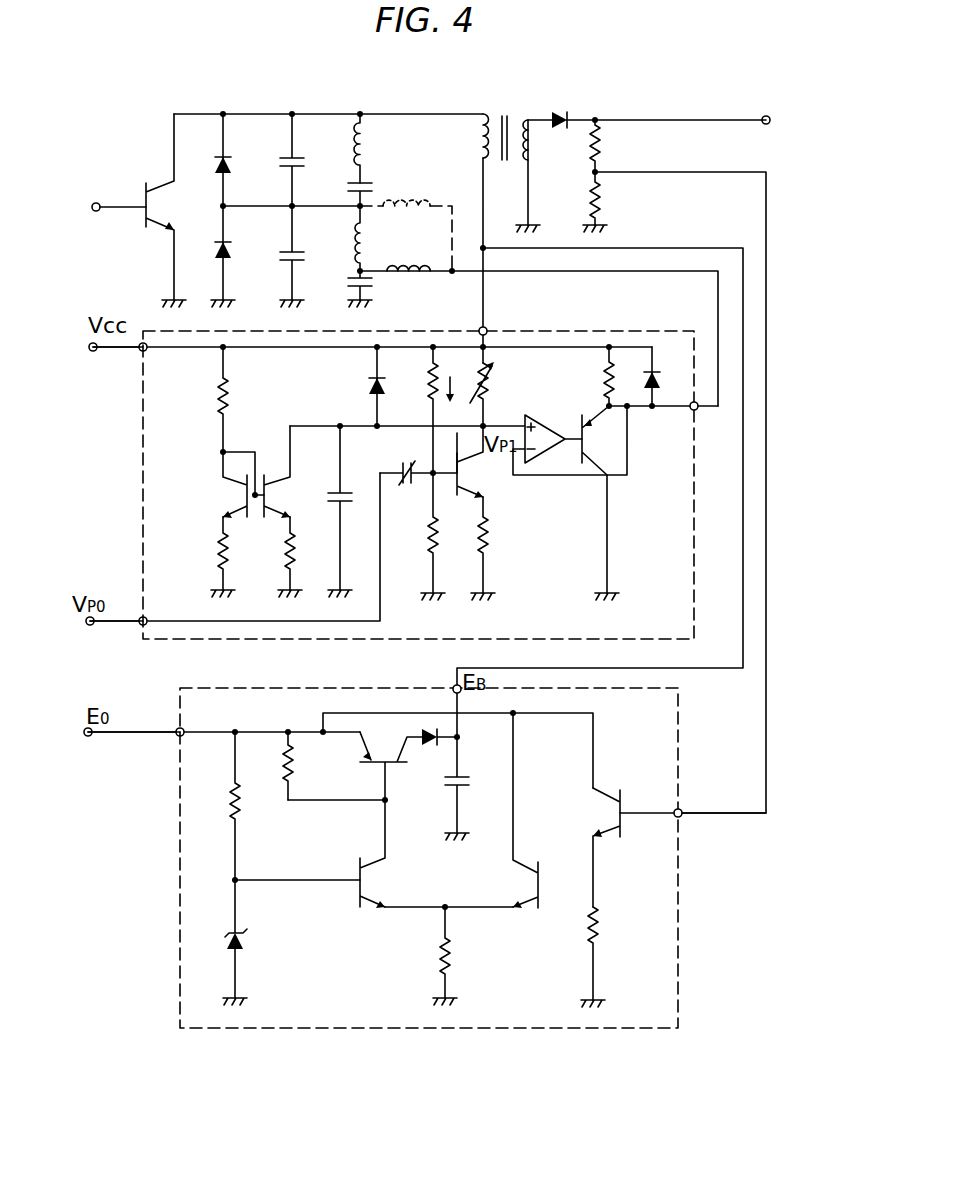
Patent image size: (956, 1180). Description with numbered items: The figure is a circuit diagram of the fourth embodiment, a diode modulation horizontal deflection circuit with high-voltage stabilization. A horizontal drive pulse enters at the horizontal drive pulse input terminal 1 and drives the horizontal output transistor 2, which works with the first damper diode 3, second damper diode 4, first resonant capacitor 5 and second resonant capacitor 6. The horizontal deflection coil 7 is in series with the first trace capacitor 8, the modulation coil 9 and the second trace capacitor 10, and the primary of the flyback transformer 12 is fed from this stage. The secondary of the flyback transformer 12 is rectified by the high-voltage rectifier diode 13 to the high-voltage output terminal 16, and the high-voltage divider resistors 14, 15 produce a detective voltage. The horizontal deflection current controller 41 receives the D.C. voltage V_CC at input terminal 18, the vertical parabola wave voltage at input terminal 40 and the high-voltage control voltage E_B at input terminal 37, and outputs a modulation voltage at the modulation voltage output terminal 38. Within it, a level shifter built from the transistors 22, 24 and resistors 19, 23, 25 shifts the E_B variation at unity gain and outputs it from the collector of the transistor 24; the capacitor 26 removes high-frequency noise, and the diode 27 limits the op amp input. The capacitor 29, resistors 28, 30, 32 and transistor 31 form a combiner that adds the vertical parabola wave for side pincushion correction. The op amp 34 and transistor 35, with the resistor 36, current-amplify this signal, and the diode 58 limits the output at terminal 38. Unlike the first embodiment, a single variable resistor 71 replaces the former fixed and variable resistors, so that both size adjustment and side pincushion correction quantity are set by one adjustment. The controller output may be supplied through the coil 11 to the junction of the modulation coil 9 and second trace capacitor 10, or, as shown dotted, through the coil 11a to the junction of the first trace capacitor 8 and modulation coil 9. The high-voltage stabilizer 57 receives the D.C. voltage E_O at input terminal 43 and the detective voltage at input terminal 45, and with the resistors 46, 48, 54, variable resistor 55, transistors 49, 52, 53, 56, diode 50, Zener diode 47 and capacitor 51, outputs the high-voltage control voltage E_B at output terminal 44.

The horizontal drive pulse input terminal 1 is at (99, 212).
The horizontal output transistor 2 is at (164, 233).
The first damper diode 3 is at (214, 165).
The second damper diode 4 is at (218, 260).
The first resonant capacitor 5 is at (282, 158).
The second resonant capacitor 6 is at (288, 263).
The horizontal deflection coil 7 is at (368, 145).
The first trace capacitor 8 is at (348, 183).
The modulation coil 9 is at (368, 226).
The second trace capacitor 10 is at (372, 290).
The coil 11 is at (421, 285).
The coil 11a is at (433, 200).
The flyback transformer 12 is at (506, 116).
The high-voltage rectifier diode 13 is at (559, 112).
The high-voltage divider resistor 14 is at (601, 146).
The high-voltage divider resistor 15 is at (601, 202).
The high-voltage output terminal 16 is at (766, 116).
The D.C. voltage V_CC input terminal 18 is at (140, 352).
The resistor 19 is at (227, 410).
The transistor 22 is at (232, 493).
The resistor 23 is at (220, 549).
The transistor 24 is at (282, 494).
The resistor 25 is at (287, 547).
The capacitor 26 is at (352, 489).
The diode 27 is at (370, 390).
The resistor 28 is at (430, 366).
The capacitor 29 is at (401, 467).
The resistor 30 is at (428, 520).
The transistor 31 is at (473, 484).
The resistor 32 is at (490, 528).
The op amp 34 is at (556, 414).
The transistor 35 is at (597, 441).
The resistor 36 is at (605, 356).
The high-voltage control voltage E_B input terminal 37 is at (487, 329).
The modulation voltage output terminal 38 is at (697, 411).
The vertical parabola wave voltage input terminal 40 is at (139, 625).
The horizontal deflection current controller 41 is at (182, 641).
The D.C. voltage E_O input terminal 43 is at (177, 736).
The high-voltage control voltage E_B output terminal 44 is at (453, 689).
The high-voltage detective voltage input terminal 45 is at (682, 812).
The resistor 46 is at (230, 791).
The Zener diode 47 is at (246, 940).
The resistor 48 is at (284, 782).
The transistor 49 is at (396, 766).
The diode 50 is at (420, 733).
The capacitor 51 is at (462, 776).
The transistor 52 is at (375, 879).
The transistor 53 is at (528, 884).
The resistor 54 is at (450, 945).
The variable resistor 55 is at (603, 920).
The transistor 56 is at (600, 808).
The high-voltage stabilizer 57 is at (178, 912).
The diode 58 is at (662, 380).
The variable resistor 71 is at (492, 378).